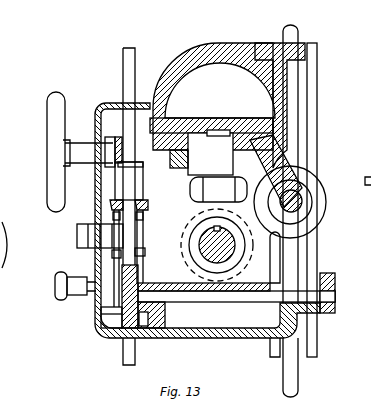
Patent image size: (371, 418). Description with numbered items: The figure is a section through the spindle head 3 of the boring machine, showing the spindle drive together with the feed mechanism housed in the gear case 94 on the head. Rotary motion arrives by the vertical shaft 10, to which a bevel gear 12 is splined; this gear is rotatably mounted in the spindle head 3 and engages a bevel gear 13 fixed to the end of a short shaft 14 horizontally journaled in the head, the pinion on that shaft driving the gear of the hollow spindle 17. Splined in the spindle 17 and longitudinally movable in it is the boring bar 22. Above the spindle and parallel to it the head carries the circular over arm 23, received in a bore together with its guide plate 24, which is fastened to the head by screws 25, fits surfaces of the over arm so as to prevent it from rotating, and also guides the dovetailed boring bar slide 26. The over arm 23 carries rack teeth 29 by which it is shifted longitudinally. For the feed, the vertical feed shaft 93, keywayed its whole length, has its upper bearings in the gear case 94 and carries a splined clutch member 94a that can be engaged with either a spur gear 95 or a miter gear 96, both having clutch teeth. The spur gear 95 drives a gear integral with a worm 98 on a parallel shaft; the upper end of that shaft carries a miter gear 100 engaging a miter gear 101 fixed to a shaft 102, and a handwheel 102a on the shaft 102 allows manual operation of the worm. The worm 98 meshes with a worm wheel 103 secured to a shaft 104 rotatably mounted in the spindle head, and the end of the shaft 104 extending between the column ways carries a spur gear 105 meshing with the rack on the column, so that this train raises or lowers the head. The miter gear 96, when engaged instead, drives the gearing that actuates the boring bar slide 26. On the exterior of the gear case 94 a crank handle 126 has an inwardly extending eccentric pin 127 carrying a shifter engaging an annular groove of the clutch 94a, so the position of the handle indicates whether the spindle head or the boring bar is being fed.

The spindle head 3 is at (232, 46).
The vertical shaft 10 is at (300, 32).
The bevel gear 12 is at (318, 233).
The bevel gear 13 is at (320, 180).
The short shaft 14 is at (302, 204).
The hollow spindle 17 is at (194, 258).
The boring bar 22 is at (206, 277).
The over arm 23 is at (182, 60).
The guide plate 24 is at (186, 137).
The screws 25 is at (176, 172).
The boring bar slide 26 is at (218, 189).
The rack teeth 29 is at (217, 131).
The feed shaft 93 is at (125, 48).
The gear case 94 is at (108, 104).
The clutch member 94a is at (142, 236).
The spur gear 95 is at (110, 262).
The miter gear 96 is at (110, 206).
The worm 98 is at (112, 310).
The miter gear 100 is at (114, 188).
The miter gear 101 is at (103, 126).
The shaft 102 is at (113, 153).
The handwheel 102a is at (55, 98).
The worm wheel 103 is at (140, 327).
The shaft 104 is at (233, 297).
The spur gear 105 is at (330, 315).
The crank handle 126 is at (56, 288).
The eccentric pin 127 is at (110, 234).